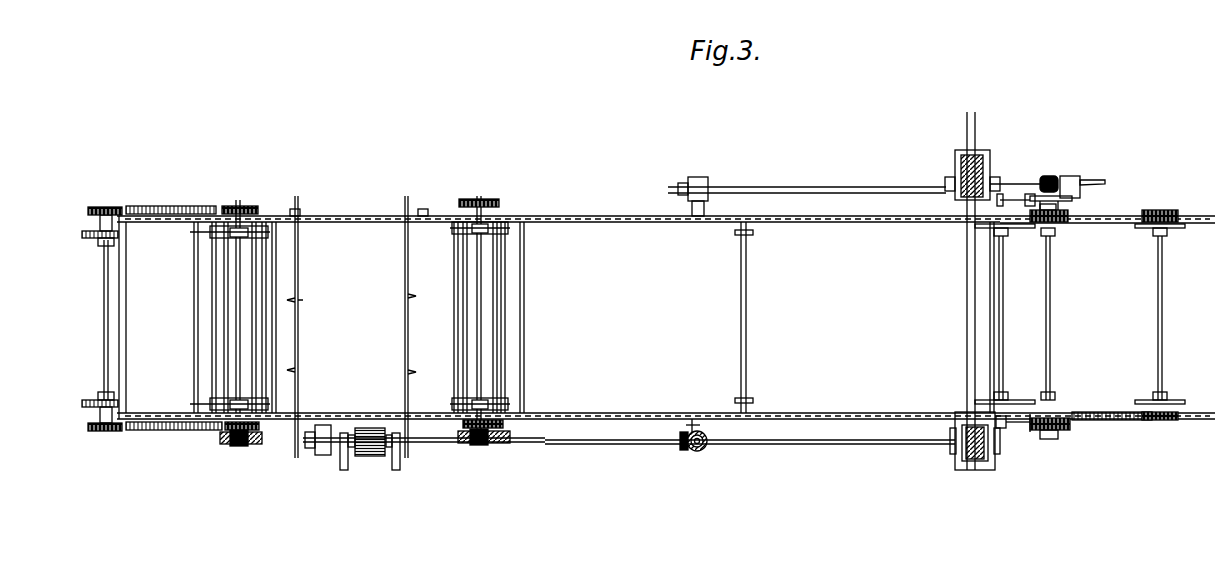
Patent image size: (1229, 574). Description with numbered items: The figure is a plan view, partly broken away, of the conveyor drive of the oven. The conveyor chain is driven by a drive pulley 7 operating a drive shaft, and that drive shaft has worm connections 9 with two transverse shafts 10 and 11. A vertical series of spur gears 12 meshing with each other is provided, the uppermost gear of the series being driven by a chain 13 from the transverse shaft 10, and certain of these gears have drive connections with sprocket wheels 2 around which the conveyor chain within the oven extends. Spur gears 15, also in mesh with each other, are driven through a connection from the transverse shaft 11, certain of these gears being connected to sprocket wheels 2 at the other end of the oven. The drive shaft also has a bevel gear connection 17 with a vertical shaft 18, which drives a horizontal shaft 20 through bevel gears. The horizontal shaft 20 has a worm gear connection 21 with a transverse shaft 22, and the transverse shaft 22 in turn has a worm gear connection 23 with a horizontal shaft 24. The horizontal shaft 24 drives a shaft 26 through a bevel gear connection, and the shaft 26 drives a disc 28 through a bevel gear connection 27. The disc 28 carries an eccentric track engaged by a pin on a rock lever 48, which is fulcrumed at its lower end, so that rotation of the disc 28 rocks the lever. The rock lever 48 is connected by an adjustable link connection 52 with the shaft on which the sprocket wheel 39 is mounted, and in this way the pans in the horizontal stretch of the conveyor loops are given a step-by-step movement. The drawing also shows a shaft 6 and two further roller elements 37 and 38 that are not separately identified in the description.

The sprocket wheels 2 is at (88, 236).
The drive shaft 6 is at (444, 444).
The drive pulley 7 is at (370, 428).
The worm connections 9 is at (238, 446).
The transverse shaft 10 is at (238, 346).
The transverse shaft 11 is at (488, 348).
The spur gears 12 is at (92, 209).
The chain 13 is at (150, 207).
The spur gears 15 is at (496, 204).
The bevel gear connection 17 is at (686, 452).
The vertical shaft 18 is at (700, 450).
The horizontal shaft 20 is at (856, 444).
The worm gear connection 21 is at (965, 440).
The transverse shaft 22 is at (966, 309).
The worm gear connection 23 is at (972, 180).
The horizontal shaft 24 is at (836, 187).
The shaft 26 is at (1078, 178).
The bevel gear connection 27 is at (1050, 176).
The disc 28 is at (1075, 200).
The roller 37 is at (1142, 230).
The roller 38 is at (1058, 230).
The sprocket wheel 39 is at (1002, 232).
The rock lever 48 is at (1008, 428).
The adjustable link connection 52 is at (1012, 200).